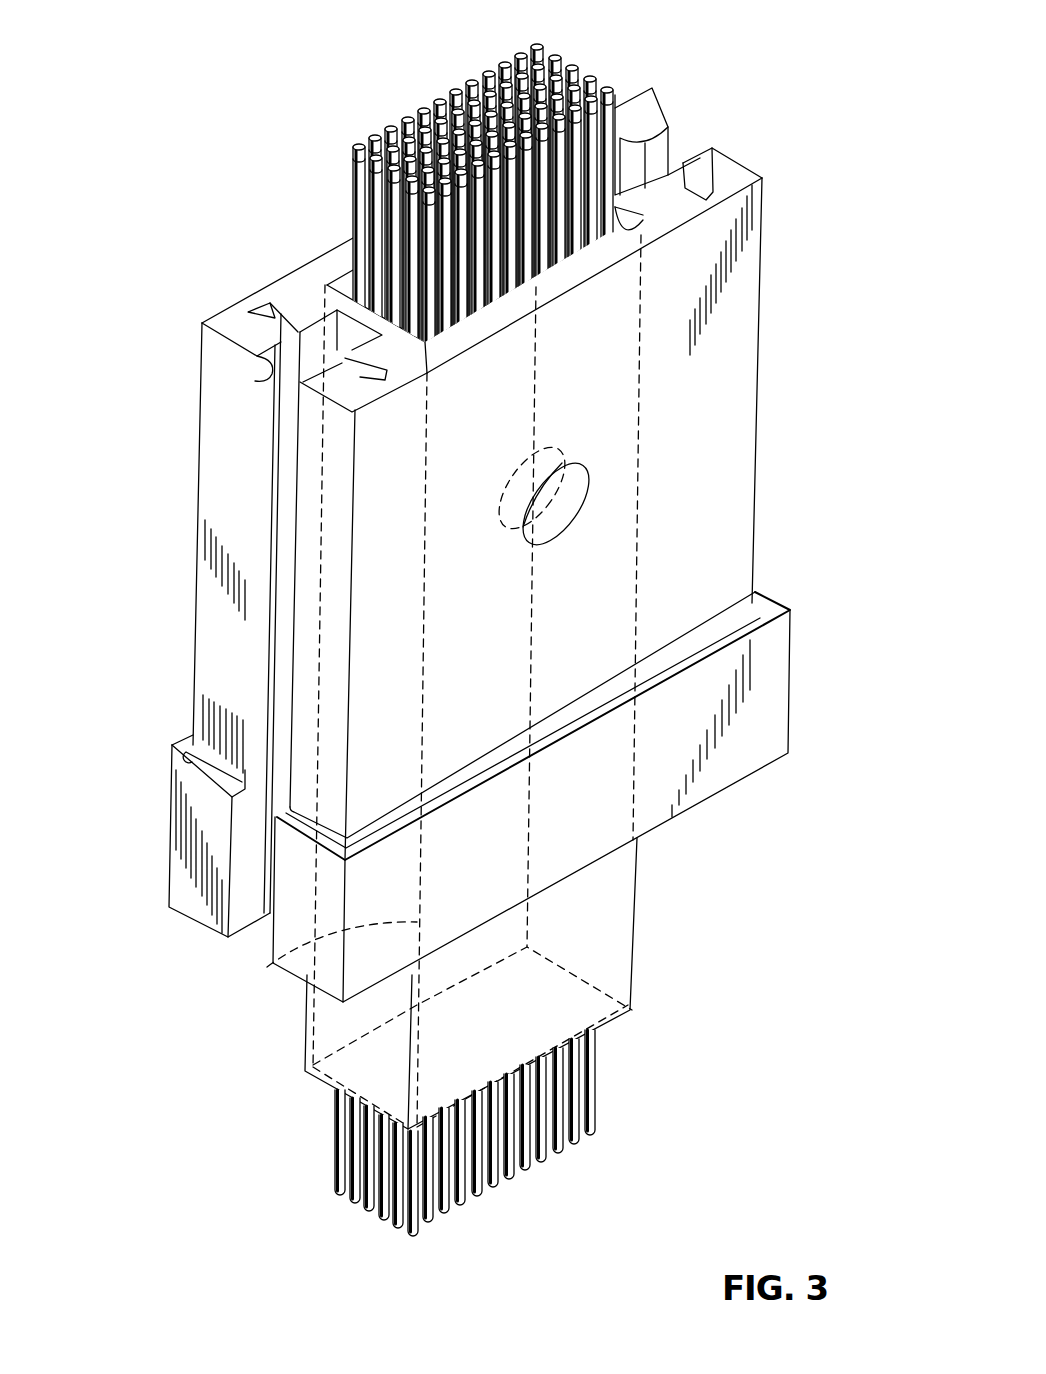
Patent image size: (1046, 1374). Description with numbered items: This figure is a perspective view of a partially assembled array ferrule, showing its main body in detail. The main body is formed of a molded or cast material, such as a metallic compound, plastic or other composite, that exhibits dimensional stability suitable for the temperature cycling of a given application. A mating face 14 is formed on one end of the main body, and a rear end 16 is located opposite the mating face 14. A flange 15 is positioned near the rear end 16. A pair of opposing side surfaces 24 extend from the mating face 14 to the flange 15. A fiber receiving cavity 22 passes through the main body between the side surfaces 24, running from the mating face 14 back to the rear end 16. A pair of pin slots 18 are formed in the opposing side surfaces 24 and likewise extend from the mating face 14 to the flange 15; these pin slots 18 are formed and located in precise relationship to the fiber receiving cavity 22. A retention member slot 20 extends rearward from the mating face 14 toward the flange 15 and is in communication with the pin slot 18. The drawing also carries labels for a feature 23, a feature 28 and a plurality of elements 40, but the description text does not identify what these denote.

The mating face 14 is at (225, 307).
The flange 15 is at (170, 830).
The rear end 16 is at (630, 1010).
The pin slots 18 is at (270, 366).
The retention member slot 20 is at (262, 308).
The fiber receiving cavity 22 is at (620, 212).
The flange 23 is at (722, 553).
The side surfaces 24 is at (757, 387).
The hole 28 is at (567, 513).
The contact pins 40 is at (456, 90).